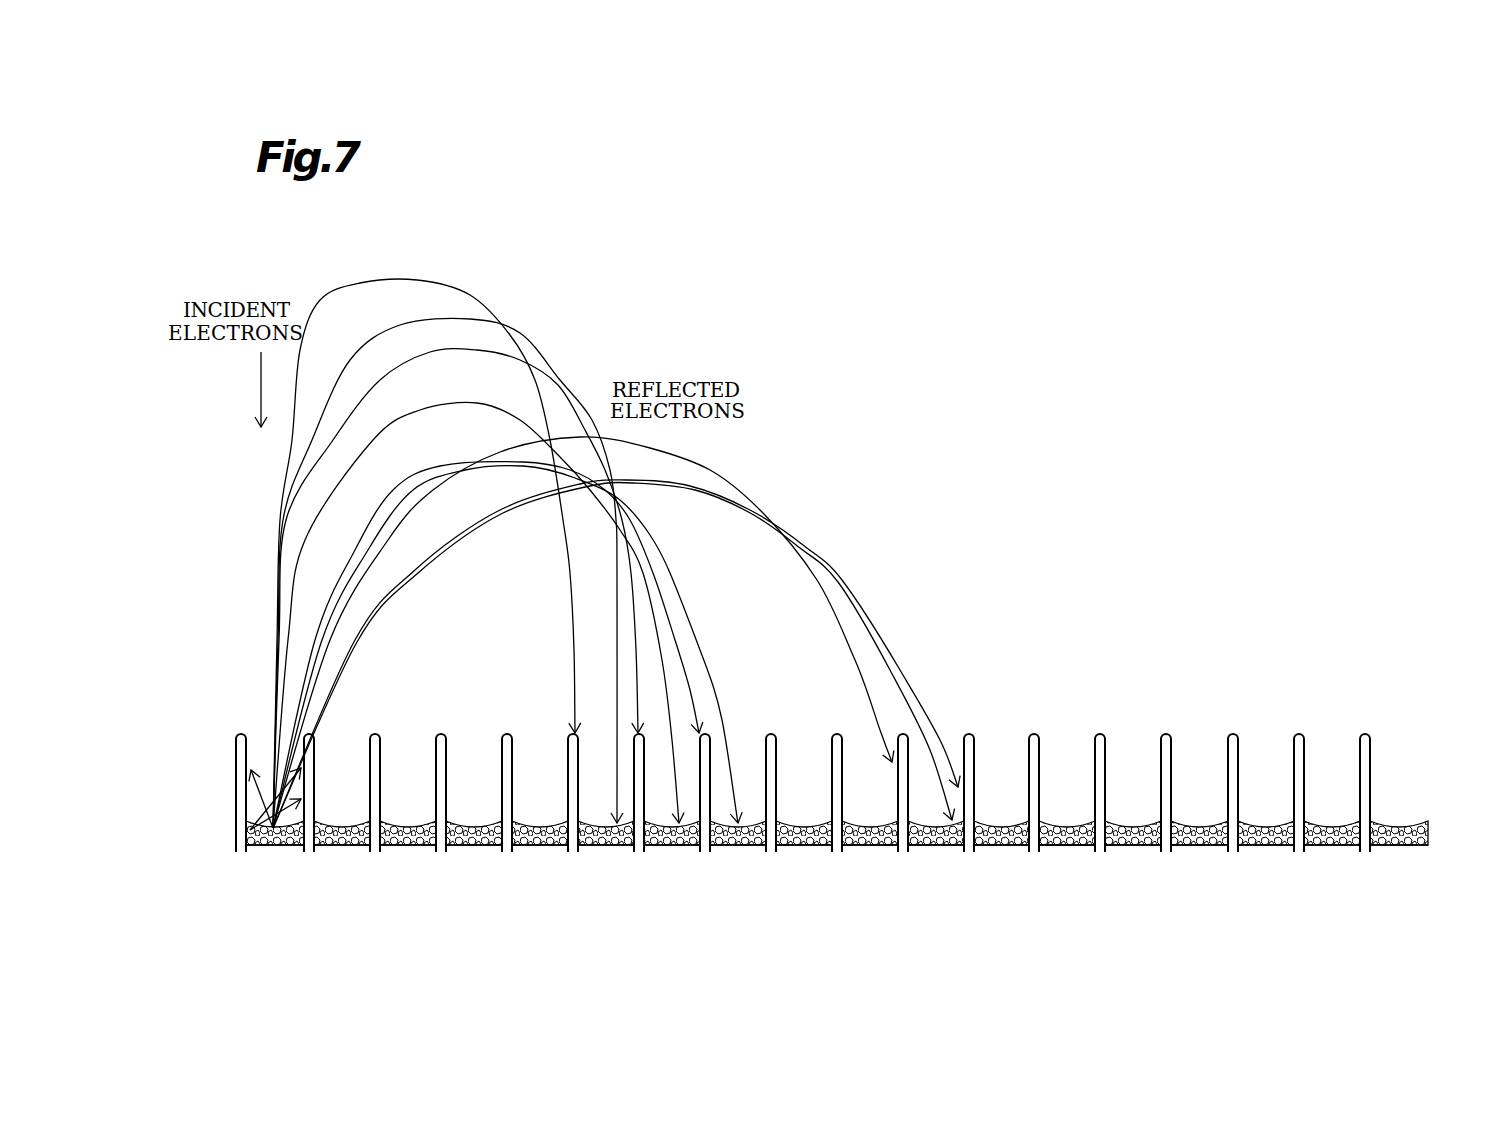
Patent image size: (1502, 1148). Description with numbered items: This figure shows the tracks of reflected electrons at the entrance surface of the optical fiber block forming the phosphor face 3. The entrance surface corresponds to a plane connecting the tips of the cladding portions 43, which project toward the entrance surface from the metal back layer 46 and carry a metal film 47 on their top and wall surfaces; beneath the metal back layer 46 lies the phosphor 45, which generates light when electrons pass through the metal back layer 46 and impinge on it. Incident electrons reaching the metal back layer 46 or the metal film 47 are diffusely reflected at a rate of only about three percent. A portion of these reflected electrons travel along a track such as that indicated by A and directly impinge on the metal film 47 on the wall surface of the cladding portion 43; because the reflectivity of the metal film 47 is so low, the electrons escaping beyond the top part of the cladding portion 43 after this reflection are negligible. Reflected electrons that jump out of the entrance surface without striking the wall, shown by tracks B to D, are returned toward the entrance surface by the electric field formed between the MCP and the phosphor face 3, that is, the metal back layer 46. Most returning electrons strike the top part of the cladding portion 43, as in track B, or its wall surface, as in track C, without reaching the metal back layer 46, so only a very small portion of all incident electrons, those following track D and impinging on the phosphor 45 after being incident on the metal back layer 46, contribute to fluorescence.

The phosphor face 3 is at (1432, 818).
The cladding portion 43 is at (1101, 851).
The phosphor 45 is at (1053, 823).
The metal back layer 46 is at (1078, 822).
The metal film 47 is at (1103, 733).
The track A is at (288, 829).
The track B is at (575, 618).
The track C is at (815, 580).
The track D is at (708, 670).